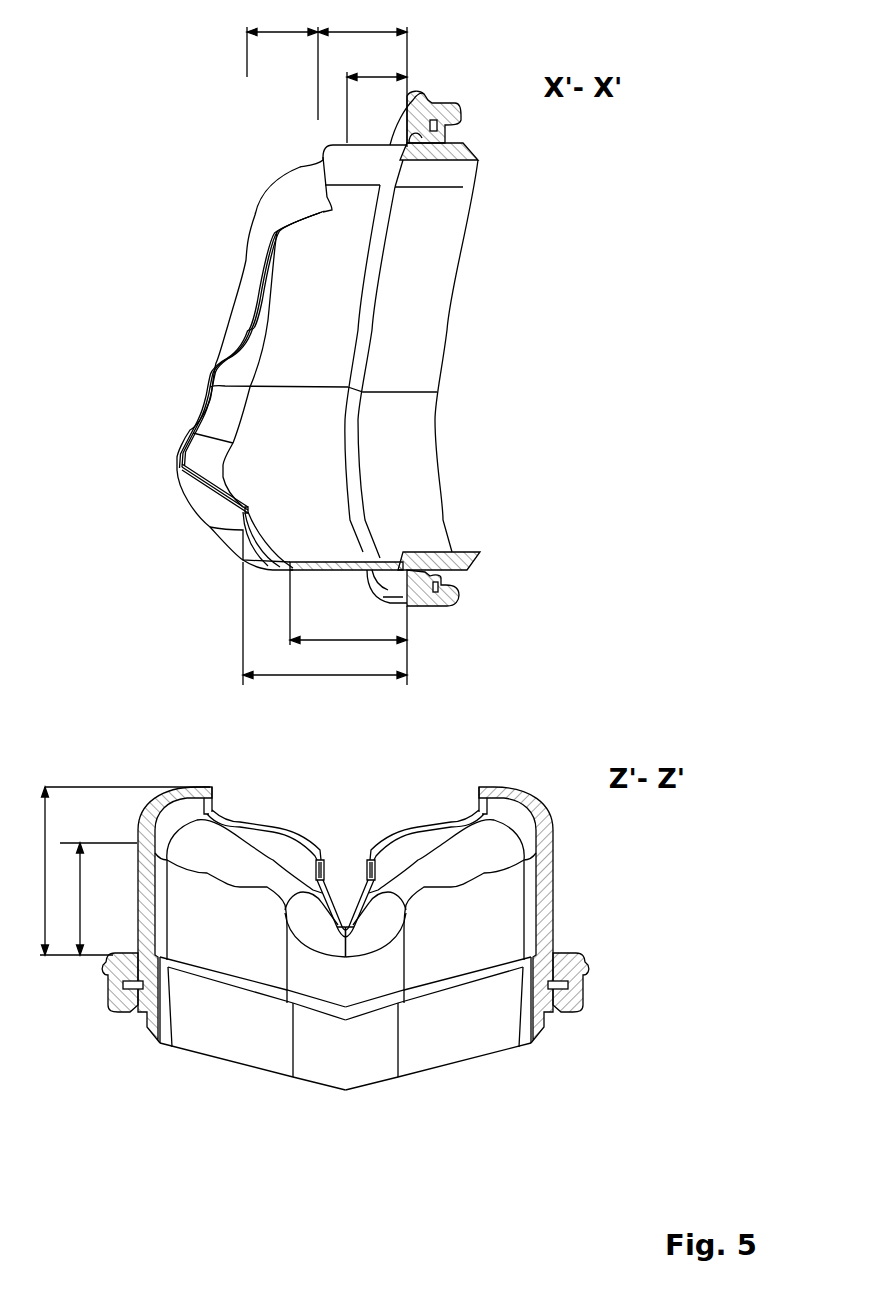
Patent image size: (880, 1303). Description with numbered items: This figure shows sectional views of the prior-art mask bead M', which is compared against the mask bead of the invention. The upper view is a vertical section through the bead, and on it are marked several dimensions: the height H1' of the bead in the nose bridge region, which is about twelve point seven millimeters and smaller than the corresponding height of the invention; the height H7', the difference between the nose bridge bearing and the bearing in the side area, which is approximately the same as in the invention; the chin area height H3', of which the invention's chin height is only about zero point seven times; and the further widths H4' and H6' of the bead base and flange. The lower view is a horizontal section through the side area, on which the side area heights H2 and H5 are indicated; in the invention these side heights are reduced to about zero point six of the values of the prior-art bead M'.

The mask bead M' is at (196, 334).
The height H1' is at (362, 77).
The height of the side area H2 is at (114, 871).
The height of the chin area H3' is at (325, 623).
The width dimension H4' is at (377, 98).
The height of the side area H5 is at (96, 899).
The width dimension H6' is at (348, 627).
The height H7' is at (282, 64).